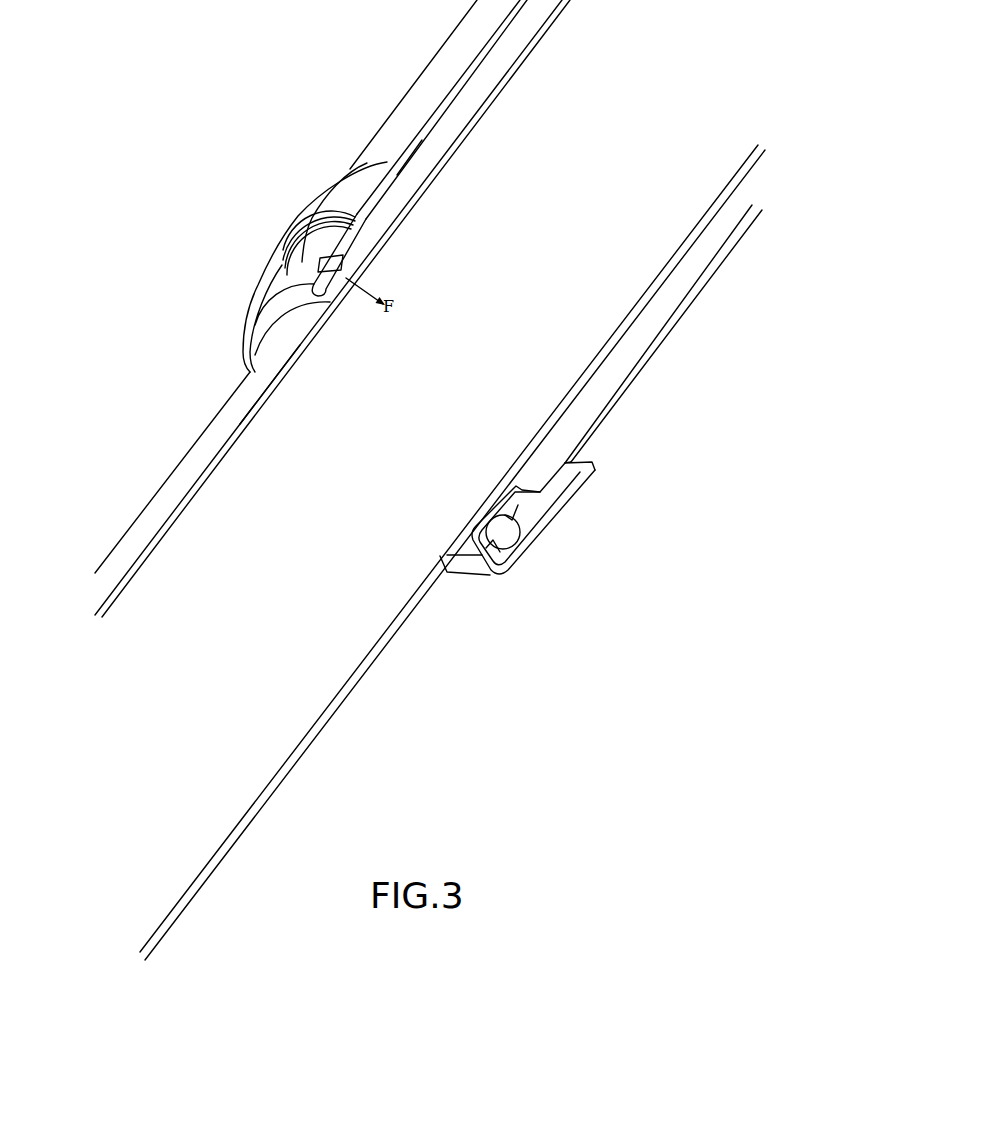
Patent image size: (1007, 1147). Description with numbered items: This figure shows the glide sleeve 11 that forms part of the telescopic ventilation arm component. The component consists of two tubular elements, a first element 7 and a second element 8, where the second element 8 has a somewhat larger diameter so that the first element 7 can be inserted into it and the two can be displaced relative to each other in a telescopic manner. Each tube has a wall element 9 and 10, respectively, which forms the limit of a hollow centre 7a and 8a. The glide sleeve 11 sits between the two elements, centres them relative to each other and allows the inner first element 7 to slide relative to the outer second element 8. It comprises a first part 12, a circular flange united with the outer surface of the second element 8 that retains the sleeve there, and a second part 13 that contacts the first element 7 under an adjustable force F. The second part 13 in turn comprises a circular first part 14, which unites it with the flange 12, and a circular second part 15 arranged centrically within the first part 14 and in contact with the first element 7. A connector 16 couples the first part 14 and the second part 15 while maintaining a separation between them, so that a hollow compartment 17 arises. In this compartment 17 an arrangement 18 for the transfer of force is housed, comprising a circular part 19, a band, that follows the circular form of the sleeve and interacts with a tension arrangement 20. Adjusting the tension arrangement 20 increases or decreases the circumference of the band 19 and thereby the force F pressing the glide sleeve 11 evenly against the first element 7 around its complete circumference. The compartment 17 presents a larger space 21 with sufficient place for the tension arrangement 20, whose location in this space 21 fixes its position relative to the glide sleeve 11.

The first element 7 is at (161, 493).
The hollow centre of the first element 7a is at (247, 436).
The second element 8 is at (398, 108).
The hollow centre of the second element 8a is at (410, 160).
The wall element of the first element 9 is at (220, 455).
The wall element of the second element 10 is at (452, 90).
The glide sleeve 11 is at (271, 238).
The first part of the glide sleeve 12 is at (285, 210).
The second part of the glide sleeve 13 is at (260, 278).
The first part of the second part 14 is at (283, 207).
The second part of the second part 15 is at (315, 250).
The connector 16 is at (258, 330).
The hollow compartment 17 is at (358, 163).
The arrangement for the transfer of force 18 is at (320, 276).
The circular part (band) 19 is at (346, 252).
The tension arrangement 20 is at (507, 525).
The larger space 21 is at (550, 508).